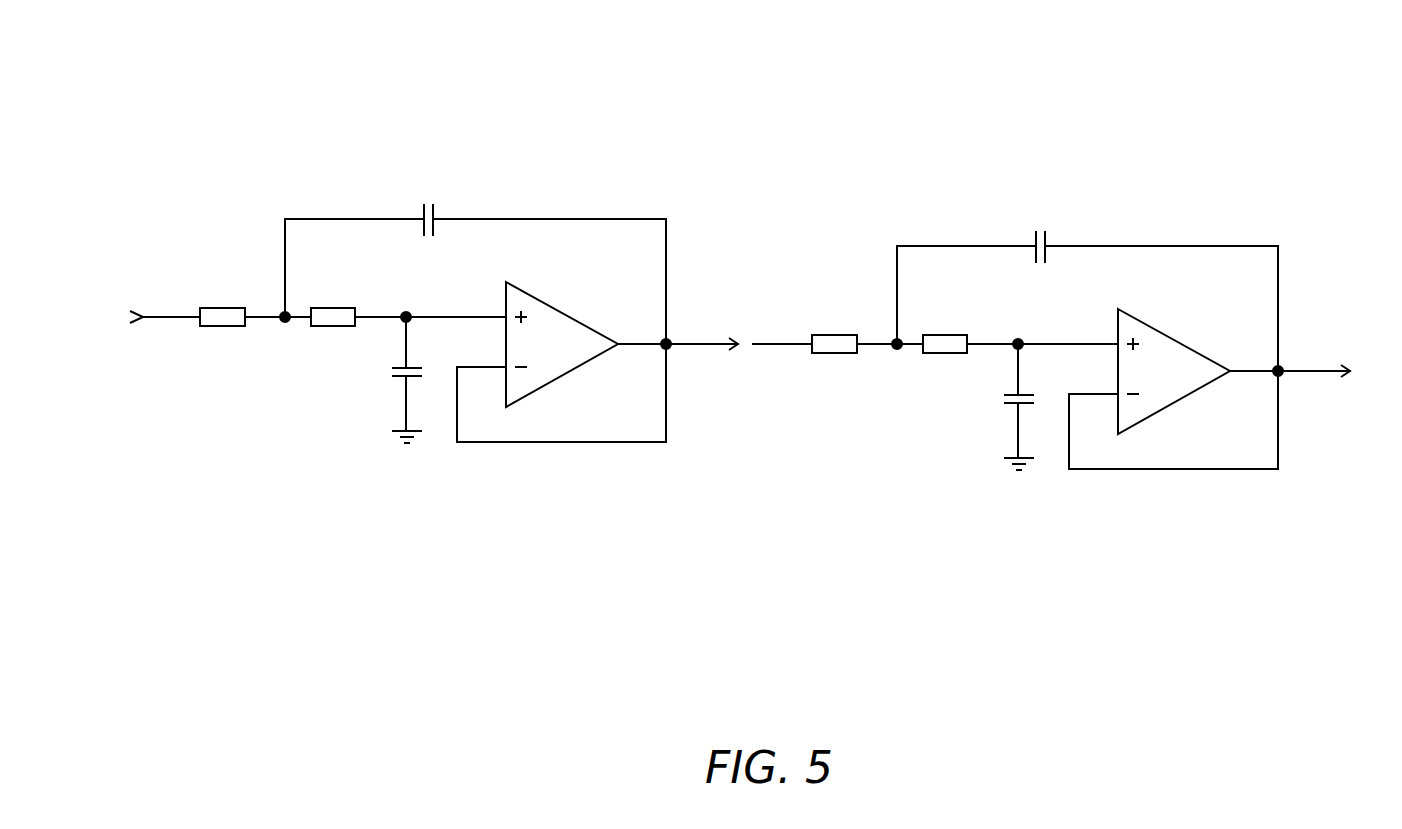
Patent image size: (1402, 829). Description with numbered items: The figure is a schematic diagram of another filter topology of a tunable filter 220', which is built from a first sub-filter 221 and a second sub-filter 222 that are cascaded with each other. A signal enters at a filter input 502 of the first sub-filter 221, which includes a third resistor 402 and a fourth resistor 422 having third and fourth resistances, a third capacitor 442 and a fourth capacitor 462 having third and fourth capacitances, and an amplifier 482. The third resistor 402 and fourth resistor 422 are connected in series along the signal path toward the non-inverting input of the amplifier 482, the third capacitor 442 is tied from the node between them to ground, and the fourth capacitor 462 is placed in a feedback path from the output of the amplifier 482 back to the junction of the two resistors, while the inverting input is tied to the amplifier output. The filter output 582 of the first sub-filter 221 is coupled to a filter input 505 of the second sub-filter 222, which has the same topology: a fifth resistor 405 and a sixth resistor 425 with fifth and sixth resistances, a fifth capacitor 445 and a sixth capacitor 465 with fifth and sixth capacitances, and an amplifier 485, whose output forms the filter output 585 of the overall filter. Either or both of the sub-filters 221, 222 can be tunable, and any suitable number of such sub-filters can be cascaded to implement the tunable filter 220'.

The tunable filter 220' is at (735, 270).
The first sub-filter 221 is at (600, 172).
The second sub-filter 222 is at (1045, 301).
The filter input 502 is at (143, 312).
The third resistor 402 is at (212, 330).
The fourth resistor 422 is at (322, 330).
The third capacitor 442 is at (392, 378).
The fourth capacitor 462 is at (415, 210).
The amplifier 482 is at (572, 359).
The filter output 582 is at (672, 337).
The filter input 505 is at (759, 365).
The fifth resistor 405 is at (810, 346).
The sixth resistor 425 is at (920, 346).
The fifth capacitor 445 is at (995, 407).
The sixth capacitor 465 is at (1087, 285).
The amplifier 485 is at (1173, 389).
The filter output 585 is at (1306, 357).